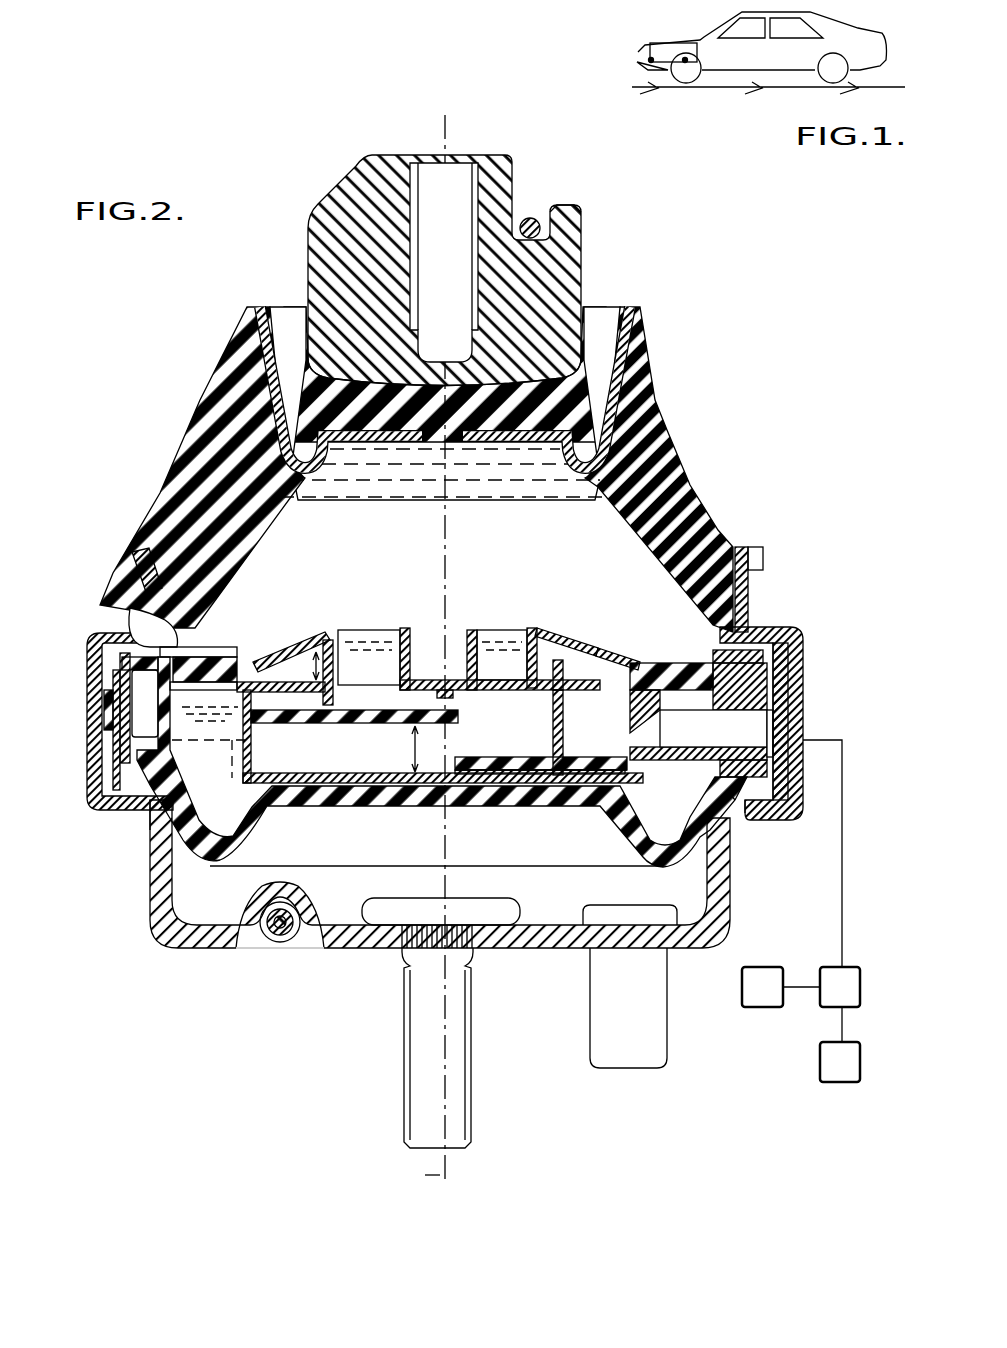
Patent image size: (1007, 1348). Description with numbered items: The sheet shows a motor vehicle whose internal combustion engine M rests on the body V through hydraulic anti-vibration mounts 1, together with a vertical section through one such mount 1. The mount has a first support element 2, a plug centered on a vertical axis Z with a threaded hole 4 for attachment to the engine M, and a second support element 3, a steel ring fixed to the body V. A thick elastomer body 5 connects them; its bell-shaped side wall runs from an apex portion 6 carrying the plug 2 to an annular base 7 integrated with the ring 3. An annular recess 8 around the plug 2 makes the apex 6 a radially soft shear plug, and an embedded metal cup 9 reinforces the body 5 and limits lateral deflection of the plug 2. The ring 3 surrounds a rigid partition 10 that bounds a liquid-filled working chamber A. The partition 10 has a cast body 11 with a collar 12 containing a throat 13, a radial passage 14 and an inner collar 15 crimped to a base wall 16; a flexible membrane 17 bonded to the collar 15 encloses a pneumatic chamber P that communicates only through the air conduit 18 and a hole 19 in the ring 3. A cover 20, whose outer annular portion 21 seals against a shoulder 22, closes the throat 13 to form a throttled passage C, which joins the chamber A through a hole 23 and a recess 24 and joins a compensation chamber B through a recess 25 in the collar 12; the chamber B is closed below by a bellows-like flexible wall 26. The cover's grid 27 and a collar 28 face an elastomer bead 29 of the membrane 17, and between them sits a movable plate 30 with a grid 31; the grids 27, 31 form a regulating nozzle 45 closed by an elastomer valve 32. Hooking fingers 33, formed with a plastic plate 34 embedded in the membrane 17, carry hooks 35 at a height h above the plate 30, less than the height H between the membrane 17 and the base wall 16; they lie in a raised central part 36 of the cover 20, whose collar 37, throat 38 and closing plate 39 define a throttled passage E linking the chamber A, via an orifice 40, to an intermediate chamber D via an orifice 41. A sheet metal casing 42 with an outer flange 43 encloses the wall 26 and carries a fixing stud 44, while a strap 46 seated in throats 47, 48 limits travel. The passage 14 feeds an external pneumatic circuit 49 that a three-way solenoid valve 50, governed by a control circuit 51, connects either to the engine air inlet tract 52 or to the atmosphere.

In FIG. 1, the hydraulic anti-vibration mount 1 is at (685, 62).
In FIG. 2, the hydraulic anti-vibration mount 1 is at (656, 293).
In FIG. 2, the first support element 2 is at (548, 270).
In FIG. 2, the second support element 3 is at (748, 655).
In FIG. 2, the threaded hole 4 is at (430, 210).
In FIG. 2, the elastomer body 5 is at (700, 430).
In FIG. 2, the apex portion 6 is at (565, 395).
In FIG. 2, the annular base 7 is at (740, 565).
In FIG. 2, the annular recess 8 is at (288, 325).
In FIG. 2, the intermediate reinforcing element 9 is at (258, 368).
In FIG. 2, the rigid partition 10 is at (634, 646).
In FIG. 2, the body 11 is at (778, 690).
In FIG. 2, the collar 12 is at (116, 765).
In FIG. 2, the throat 13 is at (138, 662).
In FIG. 2, the passage 14 is at (752, 812).
In FIG. 2, the inner collar 15 is at (262, 805).
In FIG. 2, the base wall 16 is at (545, 778).
In FIG. 2, the flexible elastomer membrane 17 is at (248, 700).
In FIG. 2, the air conduit 18 is at (730, 800).
In FIG. 2, the hole 19 is at (772, 727).
In FIG. 2, the cover 20 is at (560, 636).
In FIG. 2, the continuous outer annular portion 21 is at (780, 660).
In FIG. 2, the shoulder 22 is at (765, 645).
In FIG. 2, the hole 23 is at (128, 640).
In FIG. 2, the recess 24 is at (140, 625).
In FIG. 2, the recess 25 is at (662, 705).
In FIG. 2, the flexible elastomer wall 26 is at (470, 772).
In FIG. 2, the annular grid 27 is at (150, 560).
In FIG. 2, the collar 28 is at (218, 686).
In FIG. 2, the annular bead 29 is at (262, 685).
In FIG. 2, the rigid movable plate 30 is at (300, 724).
In FIG. 2, the grid 31 is at (220, 665).
In FIG. 2, the valve 32 is at (108, 700).
In FIG. 2, the axial hooking fingers 33 is at (338, 638).
In FIG. 2, the flat plate of plastic 34 is at (330, 784).
In FIG. 2, the hook 35 is at (328, 640).
In FIG. 2, the raised central part 36 is at (612, 652).
In FIG. 2, the collar 37 is at (472, 630).
In FIG. 2, the throat 38 is at (532, 630).
In FIG. 2, the closing plate 39 is at (487, 692).
In FIG. 2, the orifice 40 is at (505, 632).
In FIG. 2, the orifice 41 is at (404, 630).
In FIG. 2, the sheet metal casing 42 is at (168, 930).
In FIG. 2, the outer flange 43 is at (155, 815).
In FIG. 2, the stud 44 is at (435, 1070).
In FIG. 2, the annular regulating nozzle 45 is at (214, 637).
In FIG. 2, the non-extensible strap 46 is at (532, 218).
In FIG. 2, the throat 47 is at (270, 938).
In FIG. 2, the throat 48 is at (553, 228).
In FIG. 2, the external pneumatic circuit 49 is at (842, 864).
In FIG. 2, the three-way solenoid valve 50 is at (840, 987).
In FIG. 2, the control circuit 51 is at (781, 987).
In FIG. 2, the air inlet tract 52 is at (840, 1044).
In FIG. 2, the working chamber A is at (445, 497).
In FIG. 2, the compensation chamber B is at (424, 768).
In FIG. 2, the throttled passage C is at (188, 730).
In FIG. 2, the intermediate chamber D is at (500, 694).
In FIG. 2, the throttled passage E is at (432, 657).
In FIG. 2, the pneumatic chamber P is at (367, 749).
In FIG. 2, the height H is at (425, 749).
In FIG. 2, the height h is at (308, 663).
In FIG. 1, the internal combustion engine M is at (664, 48).
In FIG. 1, the body V is at (843, 30).
In FIG. 2, the vertical axis Z is at (425, 1170).